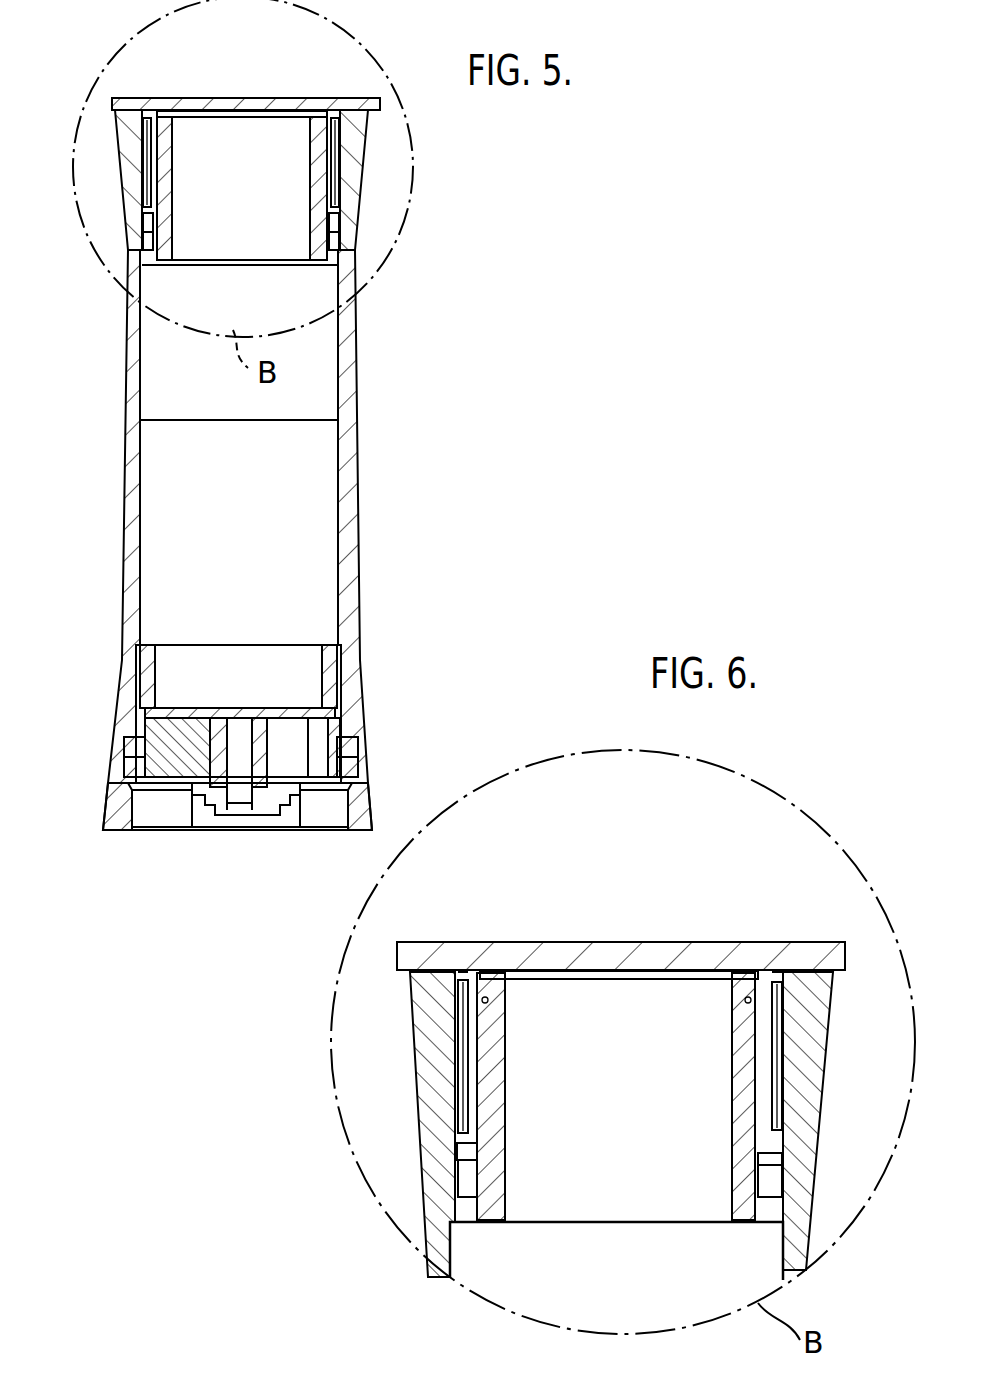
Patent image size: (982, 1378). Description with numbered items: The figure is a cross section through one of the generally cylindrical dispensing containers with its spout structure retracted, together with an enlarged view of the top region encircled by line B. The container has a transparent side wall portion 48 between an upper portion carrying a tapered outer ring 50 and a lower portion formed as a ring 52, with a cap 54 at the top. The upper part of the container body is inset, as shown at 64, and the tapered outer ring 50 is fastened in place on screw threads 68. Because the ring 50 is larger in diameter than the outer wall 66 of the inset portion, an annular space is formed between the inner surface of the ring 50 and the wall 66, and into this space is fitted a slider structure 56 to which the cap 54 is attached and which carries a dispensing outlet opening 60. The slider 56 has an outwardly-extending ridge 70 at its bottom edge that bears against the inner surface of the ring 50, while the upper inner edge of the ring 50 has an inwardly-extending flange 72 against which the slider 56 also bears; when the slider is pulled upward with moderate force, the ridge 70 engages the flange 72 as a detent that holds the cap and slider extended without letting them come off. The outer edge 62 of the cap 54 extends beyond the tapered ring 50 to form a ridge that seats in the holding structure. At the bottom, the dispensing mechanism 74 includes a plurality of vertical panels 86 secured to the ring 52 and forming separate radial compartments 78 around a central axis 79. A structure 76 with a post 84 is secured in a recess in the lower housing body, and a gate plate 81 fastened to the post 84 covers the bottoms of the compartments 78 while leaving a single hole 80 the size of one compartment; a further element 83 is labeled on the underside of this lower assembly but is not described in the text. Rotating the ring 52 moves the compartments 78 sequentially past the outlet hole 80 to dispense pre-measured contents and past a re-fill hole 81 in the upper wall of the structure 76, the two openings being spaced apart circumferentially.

In FIG. 5, the transparent side wall portion 48 is at (125, 473).
In FIG. 5, the tapered outer ring 50 is at (122, 177).
In FIG. 6, the tapered outer ring 50 is at (417, 1073).
In FIG. 5, the lower portion ring 52 is at (110, 742).
In FIG. 5, the cap 54 is at (257, 97).
In FIG. 6, the cap 54 is at (622, 940).
In FIG. 5, the slider structure 56 is at (342, 153).
In FIG. 6, the slider structure 56 is at (750, 1030).
In FIG. 5, the dispensing outlet opening 60 is at (147, 137).
In FIG. 6, the dispensing outlet opening 60 is at (465, 1020).
In FIG. 5, the outer edge of the cap 62 is at (112, 100).
In FIG. 6, the outer edge of the cap 62 is at (395, 940).
In FIG. 5, the inset upper portion of the container body 64 is at (162, 268).
In FIG. 6, the inset upper portion of the container body 64 is at (467, 1207).
In FIG. 6, the outer wall of the upper inset portion 66 is at (507, 1117).
In FIG. 6, the screw threads 68 is at (462, 1150).
In FIG. 6, the outwardly-extending ridge 70 is at (780, 1127).
In FIG. 6, the inwardly-extending flange 72 is at (462, 973).
In FIG. 5, the dispensing mechanism 74 is at (117, 668).
In FIG. 5, the structure with post 76 is at (358, 700).
In FIG. 5, the radial compartments 78 is at (293, 727).
In FIG. 5, the central axis 79 is at (240, 730).
In FIG. 5, the hole in gate plate 80 is at (303, 787).
In FIG. 5, the gate plate 81 is at (303, 710).
In FIG. 5, the fitting 83 is at (190, 798).
In FIG. 5, the post 84 is at (220, 713).
In FIG. 5, the vertical panels 86 is at (147, 748).